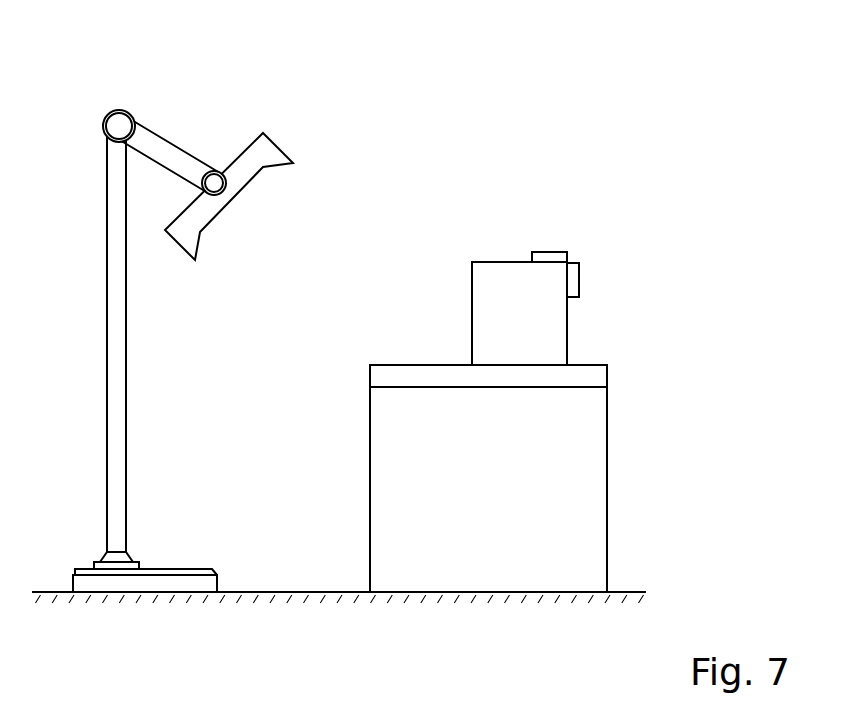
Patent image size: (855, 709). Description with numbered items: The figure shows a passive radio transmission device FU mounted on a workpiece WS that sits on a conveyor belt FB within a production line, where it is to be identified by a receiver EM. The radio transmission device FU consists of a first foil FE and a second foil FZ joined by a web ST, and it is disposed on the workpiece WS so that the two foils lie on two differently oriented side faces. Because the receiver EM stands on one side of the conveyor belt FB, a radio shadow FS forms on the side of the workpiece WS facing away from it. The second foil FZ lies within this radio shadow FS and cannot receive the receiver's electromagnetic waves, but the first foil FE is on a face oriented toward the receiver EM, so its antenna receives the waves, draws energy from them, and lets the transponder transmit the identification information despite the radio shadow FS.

The receiver EM is at (240, 175).
The radio transmission device FU is at (524, 231).
The first foil FE is at (550, 257).
The web ST is at (572, 260).
The second foil FZ is at (573, 277).
The radio shadow FS is at (585, 292).
The workpiece WS is at (508, 310).
The conveyor belt FB is at (587, 375).